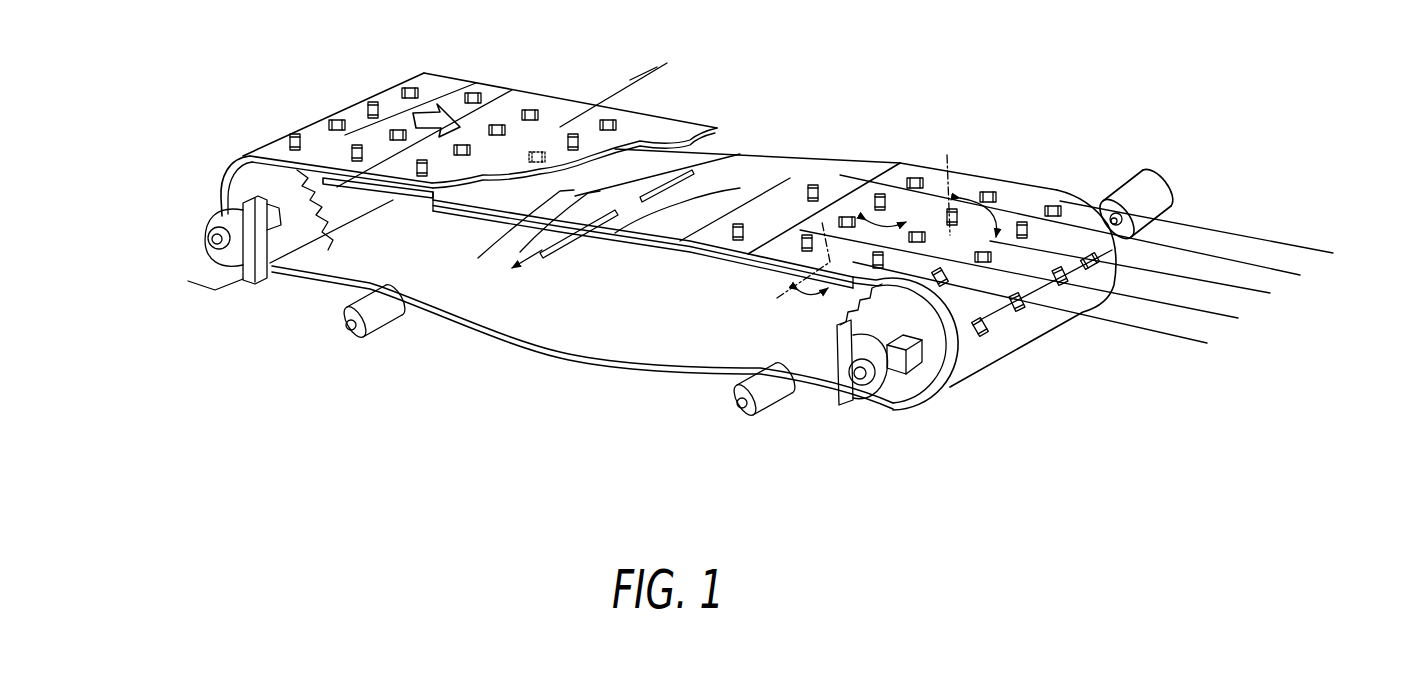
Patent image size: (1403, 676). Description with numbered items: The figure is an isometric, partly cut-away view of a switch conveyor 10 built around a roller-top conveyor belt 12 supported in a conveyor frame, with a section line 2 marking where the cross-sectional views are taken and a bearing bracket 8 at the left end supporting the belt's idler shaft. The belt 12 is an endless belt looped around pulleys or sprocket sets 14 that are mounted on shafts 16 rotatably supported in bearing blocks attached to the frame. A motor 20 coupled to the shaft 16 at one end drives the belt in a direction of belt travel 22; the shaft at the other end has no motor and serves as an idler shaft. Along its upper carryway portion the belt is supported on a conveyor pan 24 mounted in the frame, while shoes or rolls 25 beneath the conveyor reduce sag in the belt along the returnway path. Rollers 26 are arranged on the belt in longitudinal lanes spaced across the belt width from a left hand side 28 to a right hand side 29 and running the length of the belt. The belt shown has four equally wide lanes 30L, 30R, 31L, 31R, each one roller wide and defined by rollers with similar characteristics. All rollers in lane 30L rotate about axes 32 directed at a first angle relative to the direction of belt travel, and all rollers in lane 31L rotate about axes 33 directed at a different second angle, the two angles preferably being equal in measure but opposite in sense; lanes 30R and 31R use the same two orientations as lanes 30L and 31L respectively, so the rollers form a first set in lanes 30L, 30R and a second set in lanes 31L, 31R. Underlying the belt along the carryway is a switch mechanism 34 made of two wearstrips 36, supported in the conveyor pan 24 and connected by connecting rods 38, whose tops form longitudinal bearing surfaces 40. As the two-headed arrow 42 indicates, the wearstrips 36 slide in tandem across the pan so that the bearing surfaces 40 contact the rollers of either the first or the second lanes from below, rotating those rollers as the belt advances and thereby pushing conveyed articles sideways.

The section line 2- 2 is at (188, 281).
The bearing bracket 8 is at (208, 228).
The conveyor 10 is at (482, 428).
The conveyor belt 12 is at (692, 128).
The sprocket sets 14 is at (930, 387).
The shafts 16 is at (905, 357).
The motor 20 is at (1158, 180).
The direction of belt travel 22 is at (413, 113).
The conveyor pan 24 is at (818, 152).
The shoes or rolls 25 is at (388, 318).
The rollers 26 is at (985, 205).
The left hand side 28 is at (967, 173).
The right hand side 29 is at (687, 245).
The lane 30L is at (1330, 277).
The lane 30R is at (1262, 322).
The lane 31L is at (1297, 300).
The lane 31R is at (1227, 345).
The axes 32 is at (947, 153).
The axes 33 is at (784, 277).
The switch mechanism 34 is at (512, 196).
The wearstrips 36 is at (716, 160).
The connecting rods 38 is at (567, 245).
The bearing surfaces 40 is at (510, 275).
The two-headed arrow 42 is at (525, 258).